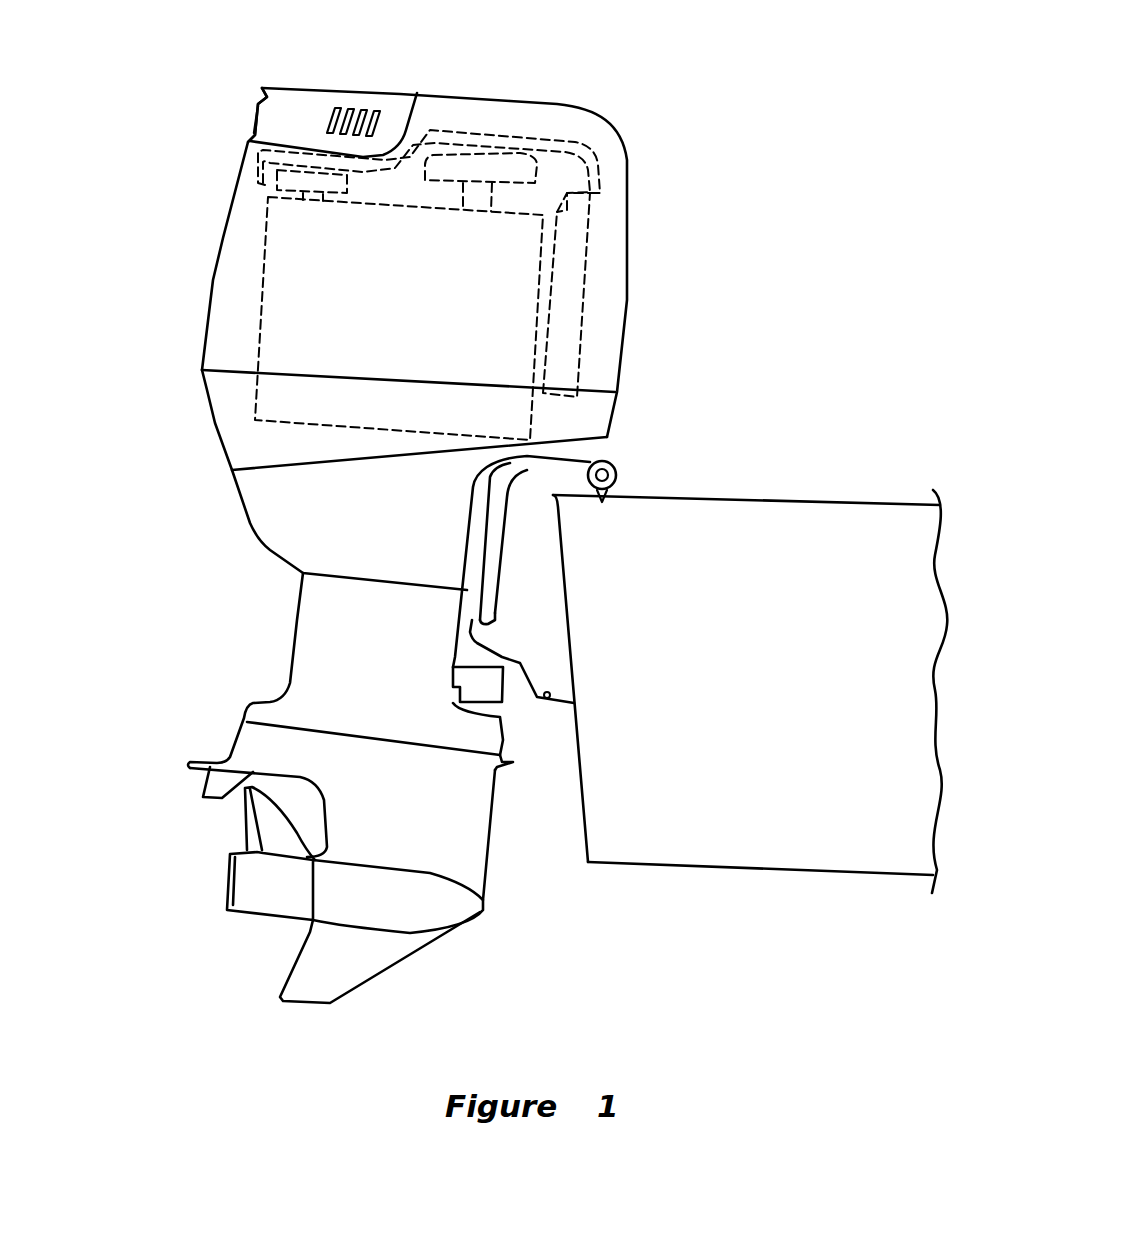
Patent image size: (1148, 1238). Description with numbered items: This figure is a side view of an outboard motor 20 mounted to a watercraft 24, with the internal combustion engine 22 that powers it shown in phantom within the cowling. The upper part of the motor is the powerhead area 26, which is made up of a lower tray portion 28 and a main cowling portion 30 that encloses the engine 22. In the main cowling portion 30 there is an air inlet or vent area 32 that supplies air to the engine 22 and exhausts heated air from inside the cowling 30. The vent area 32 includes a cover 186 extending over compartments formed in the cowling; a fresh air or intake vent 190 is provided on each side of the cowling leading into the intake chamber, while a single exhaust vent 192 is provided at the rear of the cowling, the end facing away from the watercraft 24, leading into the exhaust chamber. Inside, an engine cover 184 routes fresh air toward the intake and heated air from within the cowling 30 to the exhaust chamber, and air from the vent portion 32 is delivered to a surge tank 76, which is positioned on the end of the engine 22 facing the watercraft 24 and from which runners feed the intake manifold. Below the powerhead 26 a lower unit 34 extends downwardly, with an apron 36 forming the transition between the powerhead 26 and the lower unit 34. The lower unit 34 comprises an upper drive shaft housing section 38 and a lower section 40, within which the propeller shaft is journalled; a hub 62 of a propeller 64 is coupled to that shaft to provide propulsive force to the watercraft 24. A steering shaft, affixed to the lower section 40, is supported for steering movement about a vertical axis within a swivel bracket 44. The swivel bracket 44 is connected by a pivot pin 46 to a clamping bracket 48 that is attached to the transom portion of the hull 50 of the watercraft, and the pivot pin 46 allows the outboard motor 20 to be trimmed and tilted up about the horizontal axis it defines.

The outboard motor 20 is at (678, 131).
The engine 22 is at (278, 300).
The watercraft 24 is at (880, 408).
The powerhead area 26 is at (222, 206).
The lower tray portion 28 is at (213, 420).
The main cowling portion 30 is at (215, 273).
The air inlet or vent area 32 is at (246, 66).
The lower unit 34 is at (165, 652).
The apron 36 is at (267, 513).
The drive shaft housing section 38 is at (310, 678).
The lower section 40 is at (280, 747).
The swivel bracket 44 is at (497, 532).
The pivot pin 46 is at (617, 473).
The clamping bracket 48 is at (540, 597).
The hull 50 is at (787, 500).
The hub 62 is at (273, 903).
The propeller 64 is at (252, 822).
The surge tank 76 is at (567, 313).
The engine cover 184 is at (500, 140).
The cover 186 is at (340, 91).
The intake vent 190 is at (380, 110).
The exhaust vent 192 is at (253, 118).